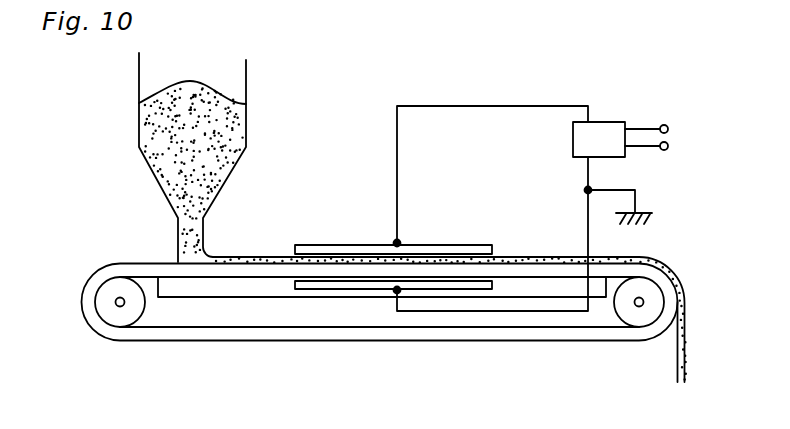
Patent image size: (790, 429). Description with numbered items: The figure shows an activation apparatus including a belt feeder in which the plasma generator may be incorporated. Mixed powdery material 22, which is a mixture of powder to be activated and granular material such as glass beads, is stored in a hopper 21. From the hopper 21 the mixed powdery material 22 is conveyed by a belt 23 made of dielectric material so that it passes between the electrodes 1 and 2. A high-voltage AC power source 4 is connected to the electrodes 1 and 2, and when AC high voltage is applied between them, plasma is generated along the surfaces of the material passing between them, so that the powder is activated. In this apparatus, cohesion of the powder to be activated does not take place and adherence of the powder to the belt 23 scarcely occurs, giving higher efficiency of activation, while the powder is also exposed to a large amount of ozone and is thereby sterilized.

The electrode 1 is at (358, 250).
The electrode 2 is at (310, 279).
The high-voltage AC power source 4 is at (604, 122).
The hopper 21 is at (248, 72).
The mixed powdery material 22 is at (236, 137).
The belt 23 is at (232, 272).